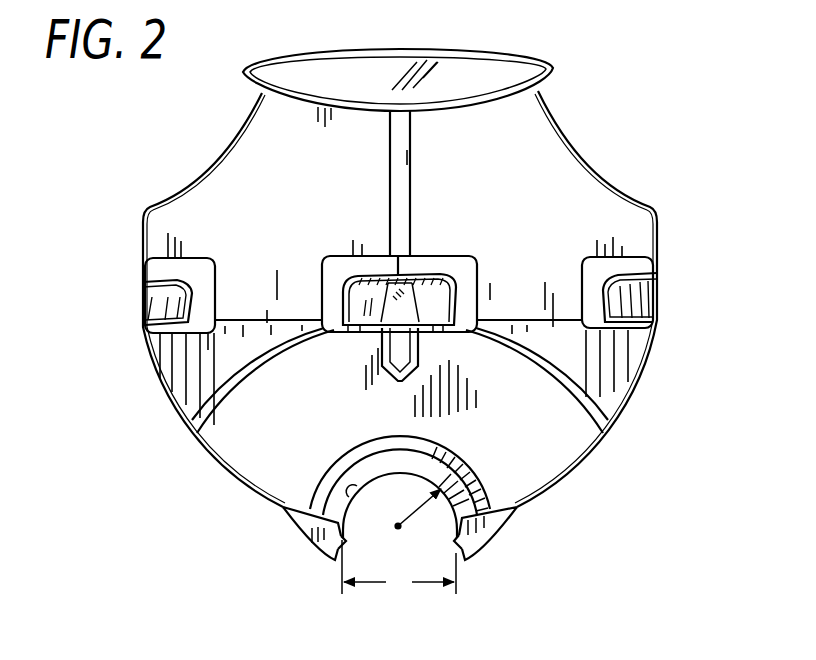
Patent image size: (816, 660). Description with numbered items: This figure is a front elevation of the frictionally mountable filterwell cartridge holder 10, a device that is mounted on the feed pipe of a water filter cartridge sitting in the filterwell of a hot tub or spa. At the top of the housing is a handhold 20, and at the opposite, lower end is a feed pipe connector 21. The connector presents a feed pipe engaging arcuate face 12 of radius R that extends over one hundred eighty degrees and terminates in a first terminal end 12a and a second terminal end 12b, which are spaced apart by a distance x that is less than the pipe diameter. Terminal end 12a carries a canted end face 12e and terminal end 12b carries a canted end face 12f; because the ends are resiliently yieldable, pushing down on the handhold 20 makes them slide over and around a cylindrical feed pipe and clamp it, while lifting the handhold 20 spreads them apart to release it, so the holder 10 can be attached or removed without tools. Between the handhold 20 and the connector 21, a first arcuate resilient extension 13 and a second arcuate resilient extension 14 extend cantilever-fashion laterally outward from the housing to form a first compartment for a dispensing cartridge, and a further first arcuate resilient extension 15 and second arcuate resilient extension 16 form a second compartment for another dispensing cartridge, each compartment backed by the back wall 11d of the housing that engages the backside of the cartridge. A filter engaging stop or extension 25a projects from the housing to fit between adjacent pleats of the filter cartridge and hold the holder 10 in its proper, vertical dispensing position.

The filterwell cartridge holder 10 is at (599, 96).
The back wall 11d is at (277, 193).
The feed pipe engaging arcuate face 12 is at (305, 519).
The first terminal end 12a is at (490, 546).
The second terminal end 12b is at (336, 551).
The canted end face 12e is at (466, 561).
The canted end face 12f is at (334, 562).
The first arcuate resilient extension 13 is at (146, 319).
The second arcuate resilient extension 14 is at (344, 328).
The first arcuate resilient extension 15 is at (457, 278).
The second arcuate resilient extension 16 is at (657, 277).
The handhold 20 is at (455, 50).
The feed pipe connector 21 is at (426, 596).
The filter engaging stop 25a is at (405, 352).